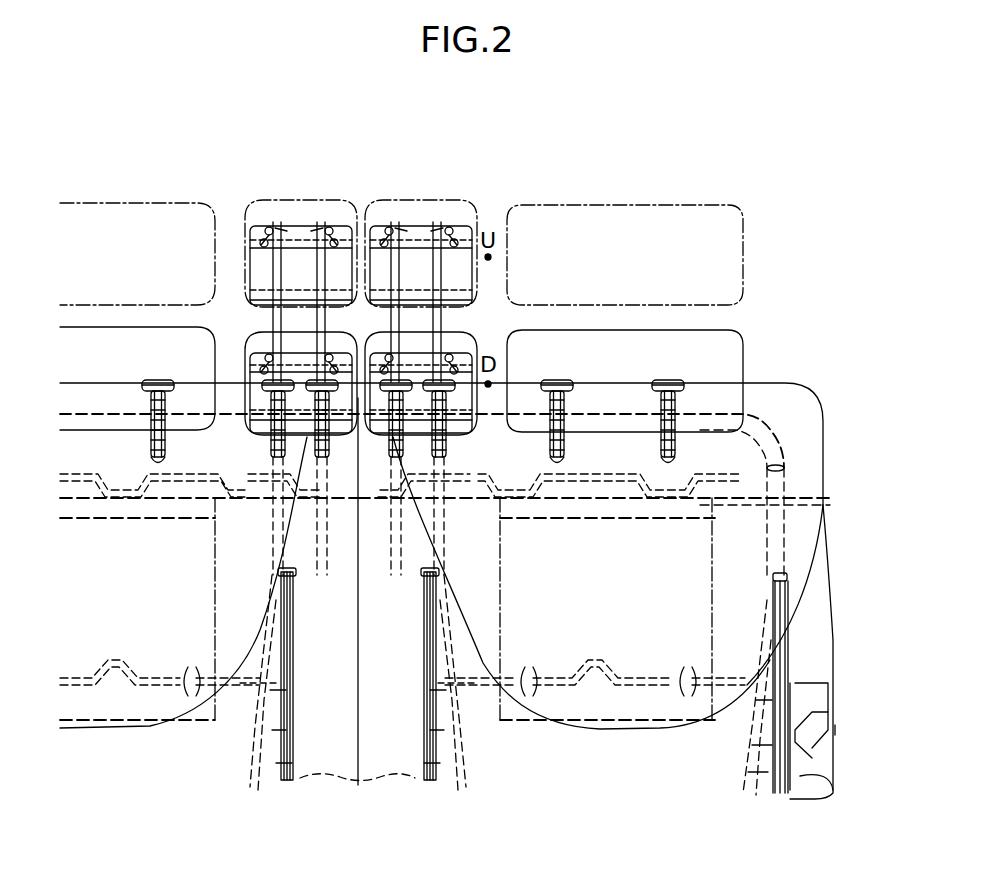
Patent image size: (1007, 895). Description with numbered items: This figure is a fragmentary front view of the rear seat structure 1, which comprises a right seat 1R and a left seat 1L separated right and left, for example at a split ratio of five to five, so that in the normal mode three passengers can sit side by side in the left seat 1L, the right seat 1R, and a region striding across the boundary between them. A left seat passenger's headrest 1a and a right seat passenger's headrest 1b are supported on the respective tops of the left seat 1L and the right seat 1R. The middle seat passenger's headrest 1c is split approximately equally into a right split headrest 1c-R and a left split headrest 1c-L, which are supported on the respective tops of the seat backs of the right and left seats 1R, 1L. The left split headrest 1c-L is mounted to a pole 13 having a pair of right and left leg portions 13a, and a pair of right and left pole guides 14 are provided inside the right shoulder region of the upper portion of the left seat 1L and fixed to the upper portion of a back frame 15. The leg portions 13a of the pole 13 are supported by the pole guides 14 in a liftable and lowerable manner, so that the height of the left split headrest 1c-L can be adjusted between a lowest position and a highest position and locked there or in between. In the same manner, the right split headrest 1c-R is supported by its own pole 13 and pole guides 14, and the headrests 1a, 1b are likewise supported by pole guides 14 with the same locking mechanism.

The rear seat structure 1 is at (806, 373).
The left seat passenger's headrest 1a is at (607, 327).
The right seat passenger's headrest 1b is at (111, 327).
The middle seat passenger's headrest 1c is at (361, 266).
The right split headrest 1c-R is at (297, 330).
The left split headrest 1c-L is at (420, 330).
The right seat 1R is at (128, 753).
The left seat 1L is at (617, 757).
The pole 13 is at (272, 317).
The leg portions 13a is at (287, 538).
The pole guides 14 is at (145, 440).
The back frame 15 is at (108, 412).